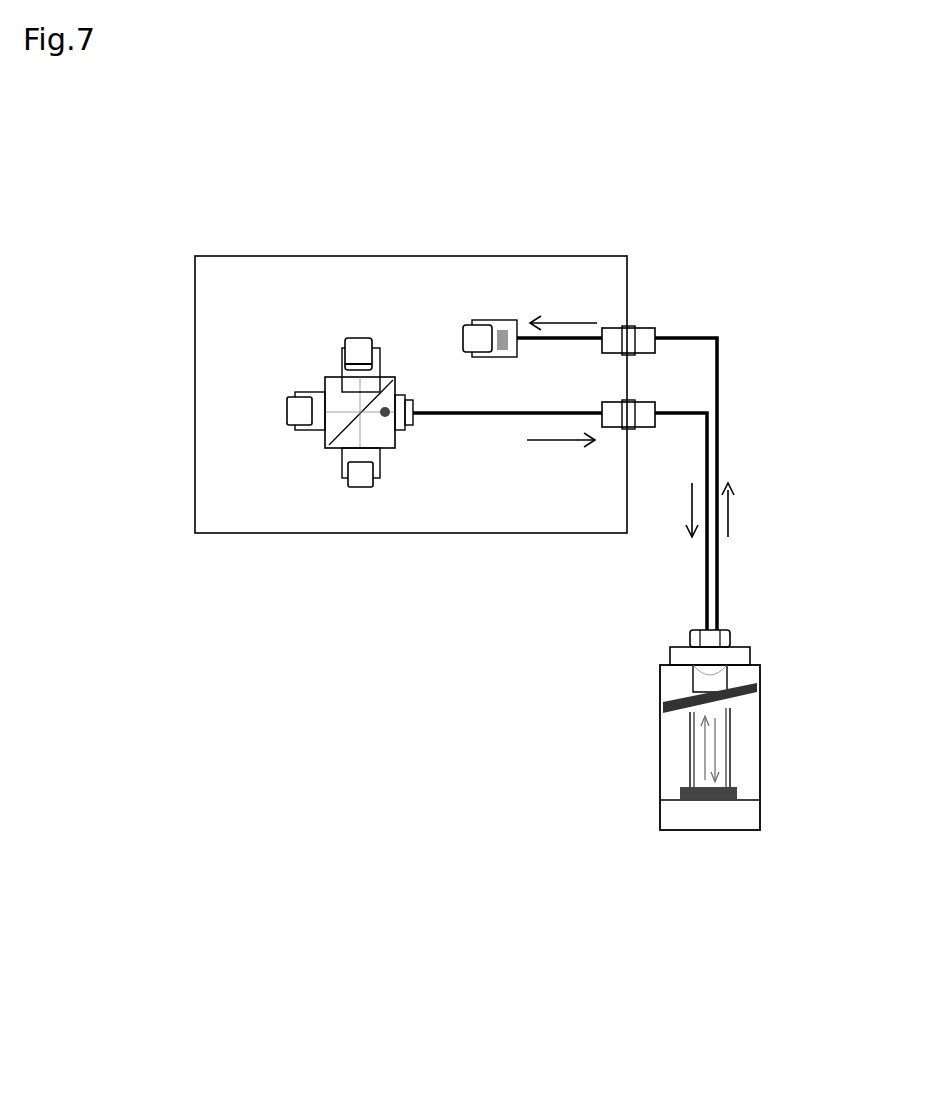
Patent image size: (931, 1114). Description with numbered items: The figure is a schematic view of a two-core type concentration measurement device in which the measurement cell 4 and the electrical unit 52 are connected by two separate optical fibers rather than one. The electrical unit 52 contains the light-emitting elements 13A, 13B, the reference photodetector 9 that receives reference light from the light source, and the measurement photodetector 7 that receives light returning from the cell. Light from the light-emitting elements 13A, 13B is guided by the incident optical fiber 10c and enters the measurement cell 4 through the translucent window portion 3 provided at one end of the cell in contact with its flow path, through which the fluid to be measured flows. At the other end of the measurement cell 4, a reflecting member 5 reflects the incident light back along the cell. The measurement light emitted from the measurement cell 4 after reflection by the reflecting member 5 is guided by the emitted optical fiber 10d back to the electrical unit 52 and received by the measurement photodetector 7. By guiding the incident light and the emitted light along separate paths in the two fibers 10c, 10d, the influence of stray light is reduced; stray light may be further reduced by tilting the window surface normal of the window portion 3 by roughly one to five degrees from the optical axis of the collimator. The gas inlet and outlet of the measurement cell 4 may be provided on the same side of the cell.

The translucent window portion 3 is at (664, 705).
The measurement cell 4 is at (731, 736).
The reflecting member 5 is at (718, 803).
The measurement photodetector 7 is at (472, 322).
The reference photodetector 9 is at (345, 350).
The incident optical fiber 10c is at (705, 596).
The emitted optical fiber 10d is at (720, 580).
The light-emitting element 13A is at (360, 487).
The light-emitting element 13B is at (292, 415).
The electrical unit 52 is at (258, 533).